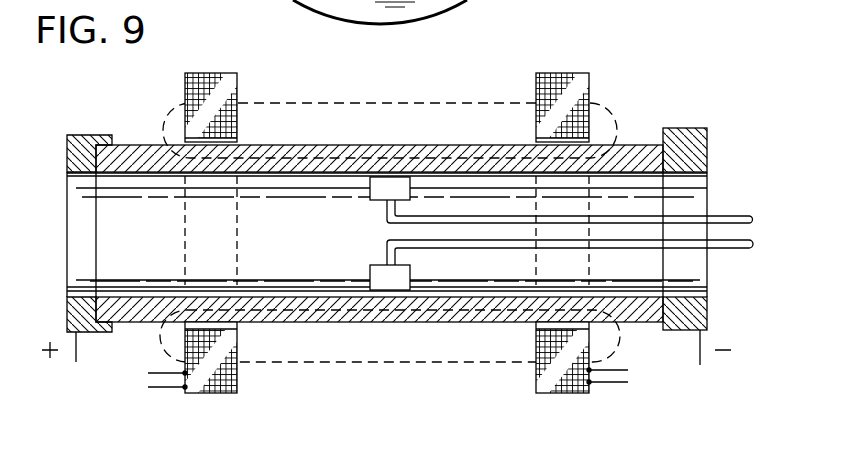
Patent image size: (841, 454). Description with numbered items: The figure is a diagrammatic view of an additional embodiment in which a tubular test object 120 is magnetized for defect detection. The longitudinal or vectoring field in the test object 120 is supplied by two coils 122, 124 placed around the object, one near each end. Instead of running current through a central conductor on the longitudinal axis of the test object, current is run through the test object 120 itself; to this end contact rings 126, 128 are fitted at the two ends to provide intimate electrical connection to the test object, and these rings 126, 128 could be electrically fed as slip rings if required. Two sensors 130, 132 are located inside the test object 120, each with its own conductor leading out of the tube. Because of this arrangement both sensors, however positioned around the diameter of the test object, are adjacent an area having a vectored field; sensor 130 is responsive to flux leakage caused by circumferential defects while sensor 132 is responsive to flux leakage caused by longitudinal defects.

The test object 120 is at (142, 146).
The coil 122 is at (228, 88).
The coil 124 is at (580, 88).
The contact ring 126 is at (84, 136).
The contact ring 128 is at (690, 128).
The sensor 130 is at (372, 185).
The sensor 132 is at (372, 279).